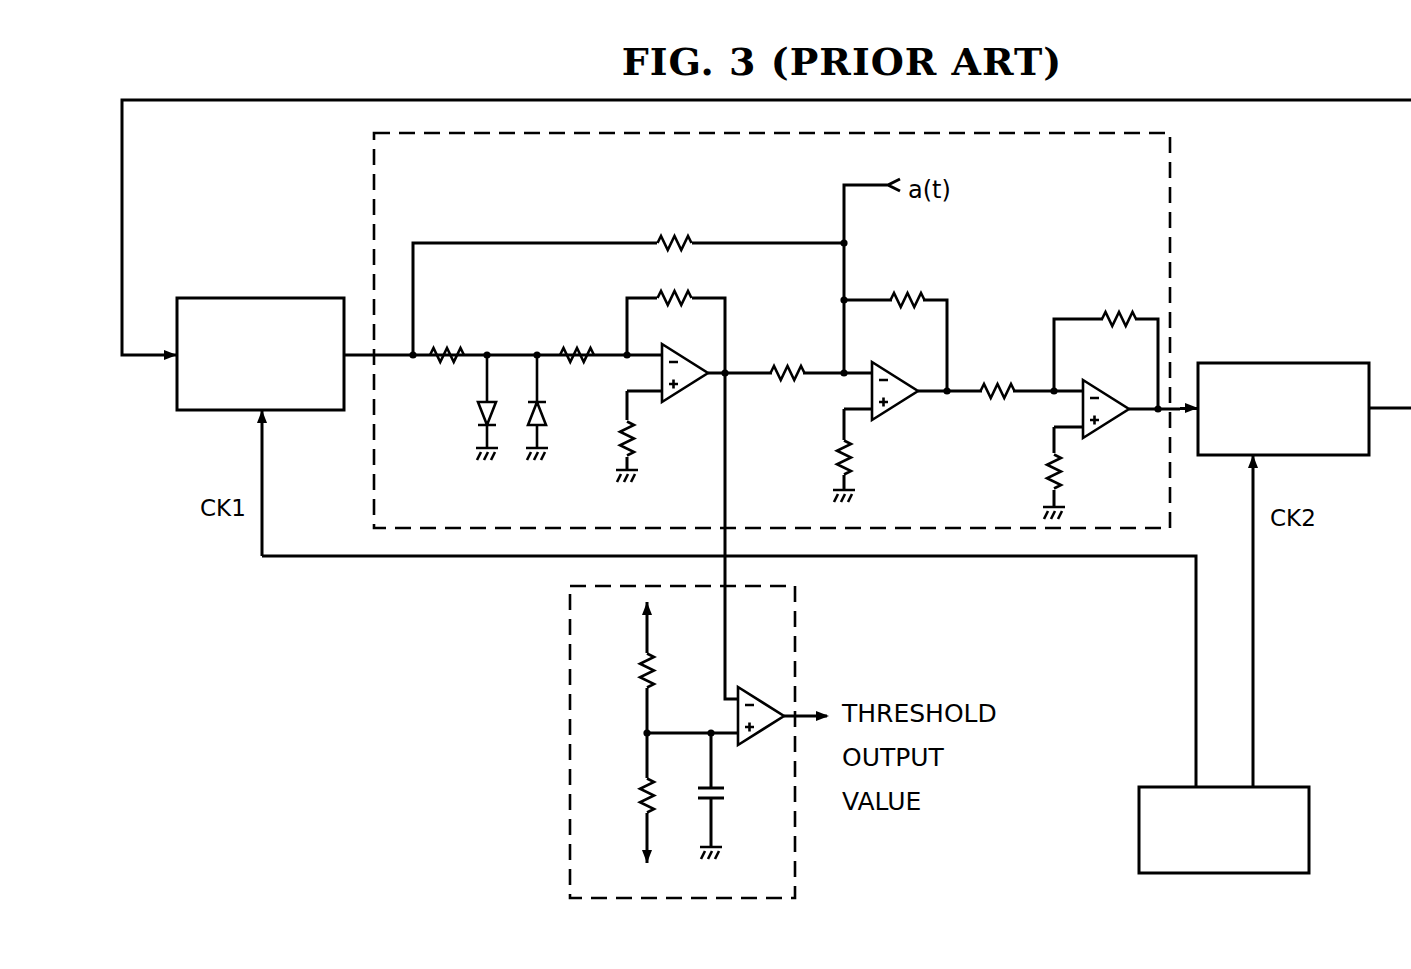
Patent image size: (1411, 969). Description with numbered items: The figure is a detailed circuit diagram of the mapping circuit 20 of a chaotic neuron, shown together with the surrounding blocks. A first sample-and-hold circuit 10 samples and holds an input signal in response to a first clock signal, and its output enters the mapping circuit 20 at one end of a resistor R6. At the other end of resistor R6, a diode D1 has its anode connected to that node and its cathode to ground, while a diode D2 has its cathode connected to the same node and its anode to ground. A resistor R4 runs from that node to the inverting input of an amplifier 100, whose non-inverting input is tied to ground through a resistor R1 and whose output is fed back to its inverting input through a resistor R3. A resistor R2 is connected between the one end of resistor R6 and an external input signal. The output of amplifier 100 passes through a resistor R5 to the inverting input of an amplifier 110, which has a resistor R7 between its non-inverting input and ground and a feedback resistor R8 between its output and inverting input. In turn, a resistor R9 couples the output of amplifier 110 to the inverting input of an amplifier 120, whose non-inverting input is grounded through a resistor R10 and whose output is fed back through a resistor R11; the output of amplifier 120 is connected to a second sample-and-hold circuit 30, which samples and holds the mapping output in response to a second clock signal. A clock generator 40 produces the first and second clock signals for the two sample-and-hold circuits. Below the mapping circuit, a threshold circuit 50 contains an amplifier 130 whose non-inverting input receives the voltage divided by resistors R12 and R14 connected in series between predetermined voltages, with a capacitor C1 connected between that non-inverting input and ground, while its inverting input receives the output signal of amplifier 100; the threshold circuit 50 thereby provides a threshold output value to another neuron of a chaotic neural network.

The first sample-and-hold circuit 10 is at (212, 412).
The mapping circuit 20 is at (1171, 209).
The second sample-and-hold circuit 30 is at (1267, 363).
The clock generator 40 is at (1287, 787).
The threshold circuit 50 is at (570, 735).
The amplifier 100 is at (687, 362).
The amplifier 110 is at (898, 378).
The amplifier 120 is at (1110, 396).
The amplifier 130 is at (759, 735).
The resistor R1 is at (645, 436).
The resistor R2 is at (628, 281).
The resistor R3 is at (676, 318).
The resistor R4 is at (577, 340).
The resistor R5 is at (798, 360).
The resistor R6 is at (447, 340).
The resistor R7 is at (861, 455).
The resistor R8 is at (895, 330).
The resistor R9 is at (1015, 380).
The resistor R10 is at (1031, 473).
The resistor R11 is at (1106, 348).
The resistor R12 is at (623, 667).
The resistor R14 is at (623, 798).
The capacitor C1 is at (695, 796).
The diode D1 is at (467, 407).
The diode D2 is at (557, 407).